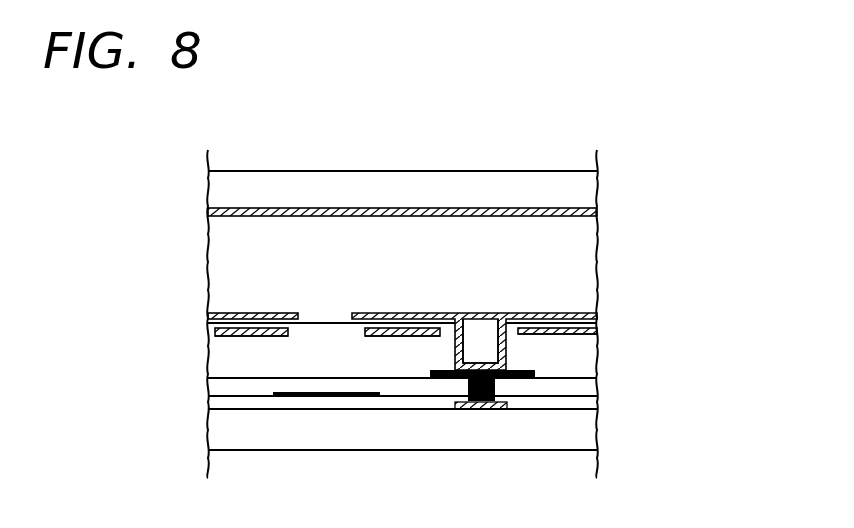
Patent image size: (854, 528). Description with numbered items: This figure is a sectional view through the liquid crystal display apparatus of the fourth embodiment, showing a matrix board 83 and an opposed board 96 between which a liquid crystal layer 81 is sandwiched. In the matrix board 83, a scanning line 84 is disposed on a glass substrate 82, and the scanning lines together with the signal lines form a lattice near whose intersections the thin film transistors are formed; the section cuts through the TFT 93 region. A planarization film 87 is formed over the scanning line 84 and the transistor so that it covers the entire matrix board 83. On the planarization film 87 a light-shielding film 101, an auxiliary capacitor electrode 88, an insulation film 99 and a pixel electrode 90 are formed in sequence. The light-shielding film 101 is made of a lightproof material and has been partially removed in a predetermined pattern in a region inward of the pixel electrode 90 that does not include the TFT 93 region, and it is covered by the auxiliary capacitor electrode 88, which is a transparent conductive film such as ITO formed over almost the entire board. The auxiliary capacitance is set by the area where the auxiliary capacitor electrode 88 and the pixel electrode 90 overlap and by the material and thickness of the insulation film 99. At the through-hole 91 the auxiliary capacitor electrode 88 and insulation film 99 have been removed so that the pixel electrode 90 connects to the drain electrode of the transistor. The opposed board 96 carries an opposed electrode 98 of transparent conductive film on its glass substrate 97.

The liquid crystal layer 81 is at (642, 224).
The glass substrate 82 is at (217, 430).
The matrix board 83 is at (642, 303).
The scanning line 84 is at (327, 397).
The planarization film 87 is at (218, 360).
The auxiliary capacitor electrode 88 is at (212, 331).
The pixel electrode 90 is at (208, 314).
The through-hole 91 is at (479, 336).
The TFT region 93 is at (483, 409).
The opposed board 96 is at (642, 160).
The glass substrate 97 is at (213, 190).
The opposed electrode 98 is at (208, 212).
The insulation film 99 is at (208, 321).
The light-shielding film 101 is at (210, 342).